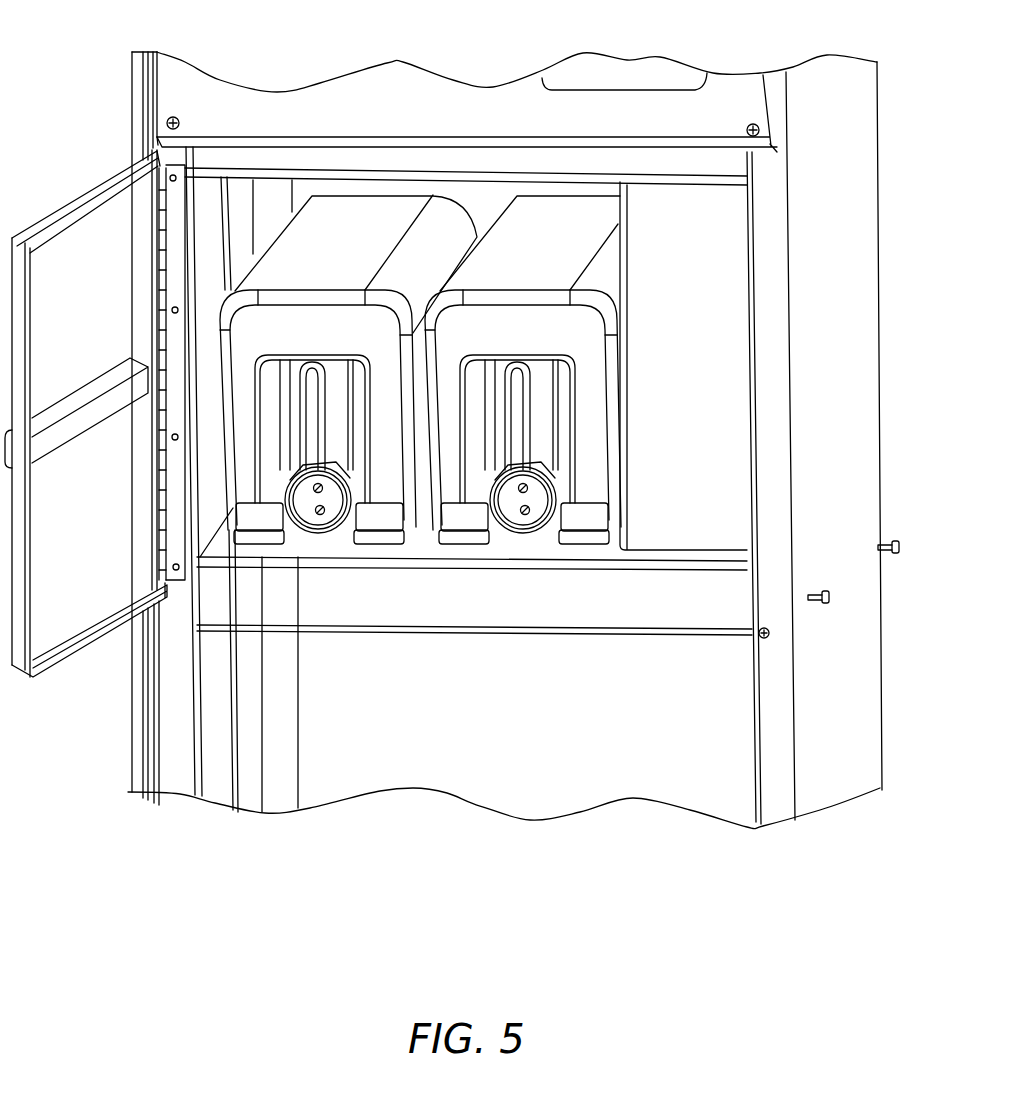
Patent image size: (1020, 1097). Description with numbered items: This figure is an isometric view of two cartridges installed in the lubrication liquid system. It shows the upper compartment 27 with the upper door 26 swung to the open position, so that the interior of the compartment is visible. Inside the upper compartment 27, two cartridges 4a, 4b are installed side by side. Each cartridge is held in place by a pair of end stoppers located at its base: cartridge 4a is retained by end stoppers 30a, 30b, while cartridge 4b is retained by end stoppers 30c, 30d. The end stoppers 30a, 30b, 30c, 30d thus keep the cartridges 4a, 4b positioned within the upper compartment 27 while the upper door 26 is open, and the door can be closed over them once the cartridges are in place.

The cartridge 4a is at (300, 327).
The cartridge 4b is at (500, 327).
The upper door 26 is at (84, 192).
The upper compartment 27 is at (767, 272).
The end stopper 30a is at (262, 525).
The end stopper 30b is at (378, 525).
The end stopper 30c is at (467, 525).
The end stopper 30d is at (585, 525).